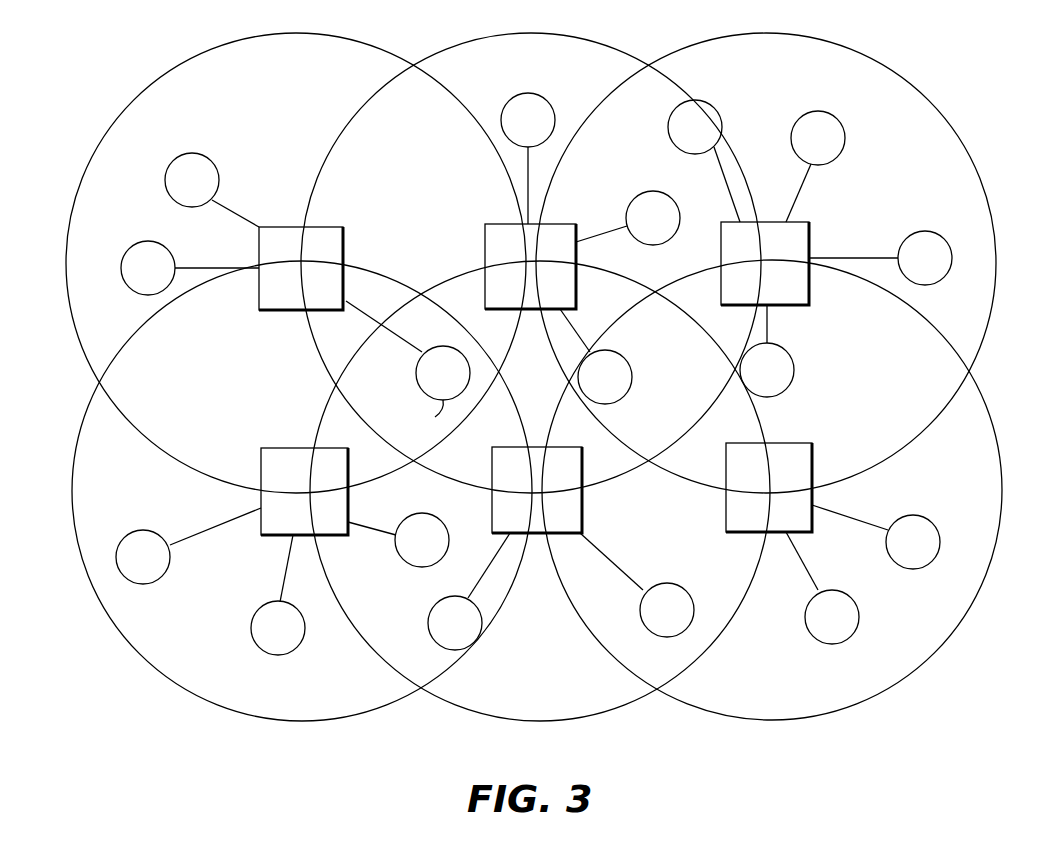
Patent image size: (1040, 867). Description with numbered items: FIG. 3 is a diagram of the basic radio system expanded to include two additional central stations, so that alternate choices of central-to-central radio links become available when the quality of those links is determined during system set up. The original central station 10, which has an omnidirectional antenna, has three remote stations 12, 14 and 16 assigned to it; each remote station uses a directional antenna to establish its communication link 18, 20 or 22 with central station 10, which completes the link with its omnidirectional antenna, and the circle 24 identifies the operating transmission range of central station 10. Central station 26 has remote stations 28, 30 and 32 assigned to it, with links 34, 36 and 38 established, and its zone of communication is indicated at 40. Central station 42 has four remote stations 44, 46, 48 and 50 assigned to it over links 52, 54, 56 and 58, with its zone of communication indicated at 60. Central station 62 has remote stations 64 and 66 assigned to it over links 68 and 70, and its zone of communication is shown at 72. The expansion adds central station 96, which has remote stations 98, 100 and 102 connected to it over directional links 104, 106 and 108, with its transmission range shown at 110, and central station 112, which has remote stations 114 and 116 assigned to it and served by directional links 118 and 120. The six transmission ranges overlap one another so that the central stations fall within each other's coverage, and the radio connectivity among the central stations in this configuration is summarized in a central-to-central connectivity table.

The central station 10 is at (318, 225).
The remote station 12 is at (434, 393).
The remote station 14 is at (148, 268).
The remote station 16 is at (192, 180).
The communication link 18 is at (393, 333).
The communication link 20 is at (195, 262).
The communication link 22 is at (243, 215).
The circle 24 is at (138, 430).
The central station 26 is at (505, 223).
The remote station 28 is at (528, 120).
The remote station 30 is at (653, 218).
The remote station 32 is at (605, 377).
The link 34 is at (530, 165).
The link 36 is at (600, 232).
The link 38 is at (582, 333).
The zone of communication 40 is at (337, 137).
The central station 42 is at (807, 222).
The remote station 44 is at (818, 138).
The remote station 46 is at (925, 258).
The remote station 48 is at (767, 370).
The remote station 50 is at (695, 127).
The link 52 is at (803, 185).
The link 54 is at (860, 258).
The link 56 is at (767, 323).
The link 58 is at (715, 178).
The zone of communication 60 is at (923, 432).
The central station 62 is at (583, 522).
The remote station 64 is at (667, 610).
The remote station 66 is at (455, 623).
The link 68 is at (622, 565).
The link 70 is at (480, 580).
The zone of communication 72 is at (440, 697).
The central station 96 is at (287, 447).
The remote station 98 is at (422, 540).
The remote station 100 is at (278, 628).
The remote station 102 is at (143, 557).
The directional link 104 is at (367, 520).
The directional link 106 is at (285, 573).
The directional link 108 is at (225, 515).
The transmission range 110 is at (170, 680).
The central station 112 is at (792, 443).
The remote station 114 is at (913, 542).
The remote station 116 is at (832, 617).
The directional link 118 is at (853, 518).
The directional link 120 is at (803, 557).